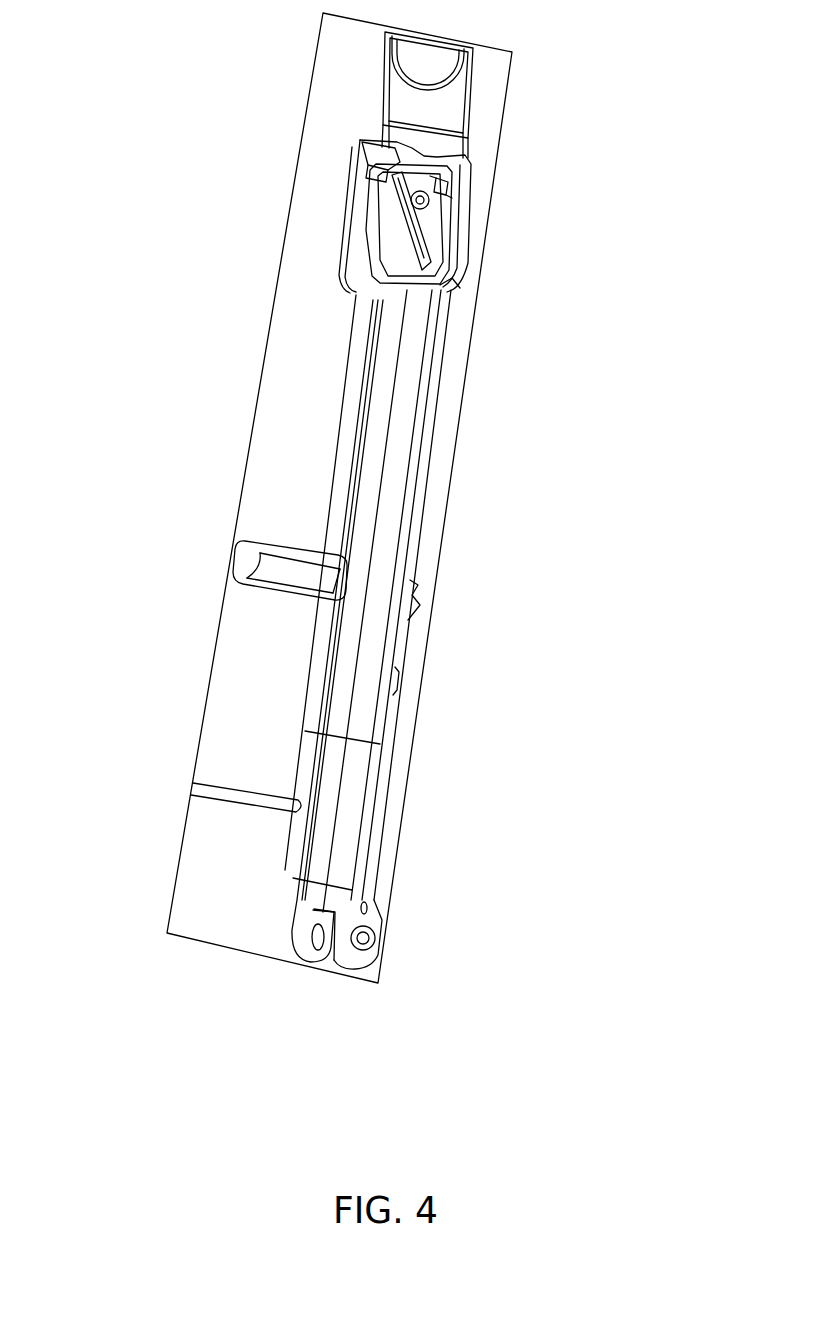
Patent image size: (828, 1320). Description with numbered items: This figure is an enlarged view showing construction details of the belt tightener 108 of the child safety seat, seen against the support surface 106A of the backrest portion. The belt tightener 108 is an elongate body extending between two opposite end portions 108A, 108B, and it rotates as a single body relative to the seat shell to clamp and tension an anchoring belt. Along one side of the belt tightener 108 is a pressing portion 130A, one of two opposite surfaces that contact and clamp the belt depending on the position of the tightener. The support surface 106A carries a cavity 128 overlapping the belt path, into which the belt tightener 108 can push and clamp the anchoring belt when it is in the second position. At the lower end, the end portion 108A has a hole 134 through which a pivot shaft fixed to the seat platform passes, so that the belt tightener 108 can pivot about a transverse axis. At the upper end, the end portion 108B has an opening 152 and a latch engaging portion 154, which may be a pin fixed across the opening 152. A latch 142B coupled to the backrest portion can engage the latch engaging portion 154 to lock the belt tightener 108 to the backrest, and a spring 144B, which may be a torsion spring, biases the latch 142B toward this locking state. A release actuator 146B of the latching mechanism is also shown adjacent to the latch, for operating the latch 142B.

The support surface 106A is at (272, 470).
The belt tightener 108 is at (400, 484).
The end portion 108A is at (360, 964).
The end portion 108B is at (448, 210).
The cavity 128 is at (412, 665).
The pressing portion 130A is at (385, 366).
The hole 134 is at (375, 938).
The latch 142B is at (430, 227).
The spring 144B is at (358, 140).
The release actuator 146B is at (447, 103).
The opening 152 is at (403, 243).
The latch engaging portion 154 is at (443, 185).